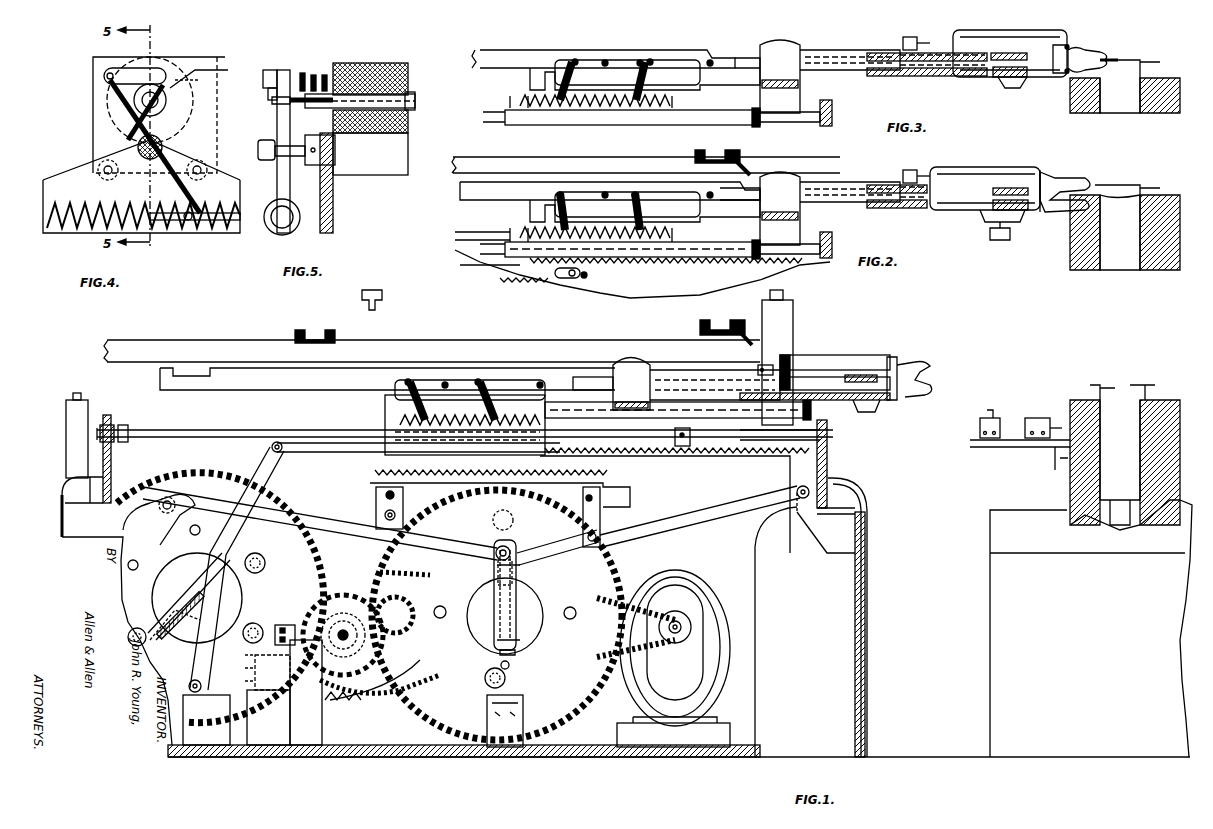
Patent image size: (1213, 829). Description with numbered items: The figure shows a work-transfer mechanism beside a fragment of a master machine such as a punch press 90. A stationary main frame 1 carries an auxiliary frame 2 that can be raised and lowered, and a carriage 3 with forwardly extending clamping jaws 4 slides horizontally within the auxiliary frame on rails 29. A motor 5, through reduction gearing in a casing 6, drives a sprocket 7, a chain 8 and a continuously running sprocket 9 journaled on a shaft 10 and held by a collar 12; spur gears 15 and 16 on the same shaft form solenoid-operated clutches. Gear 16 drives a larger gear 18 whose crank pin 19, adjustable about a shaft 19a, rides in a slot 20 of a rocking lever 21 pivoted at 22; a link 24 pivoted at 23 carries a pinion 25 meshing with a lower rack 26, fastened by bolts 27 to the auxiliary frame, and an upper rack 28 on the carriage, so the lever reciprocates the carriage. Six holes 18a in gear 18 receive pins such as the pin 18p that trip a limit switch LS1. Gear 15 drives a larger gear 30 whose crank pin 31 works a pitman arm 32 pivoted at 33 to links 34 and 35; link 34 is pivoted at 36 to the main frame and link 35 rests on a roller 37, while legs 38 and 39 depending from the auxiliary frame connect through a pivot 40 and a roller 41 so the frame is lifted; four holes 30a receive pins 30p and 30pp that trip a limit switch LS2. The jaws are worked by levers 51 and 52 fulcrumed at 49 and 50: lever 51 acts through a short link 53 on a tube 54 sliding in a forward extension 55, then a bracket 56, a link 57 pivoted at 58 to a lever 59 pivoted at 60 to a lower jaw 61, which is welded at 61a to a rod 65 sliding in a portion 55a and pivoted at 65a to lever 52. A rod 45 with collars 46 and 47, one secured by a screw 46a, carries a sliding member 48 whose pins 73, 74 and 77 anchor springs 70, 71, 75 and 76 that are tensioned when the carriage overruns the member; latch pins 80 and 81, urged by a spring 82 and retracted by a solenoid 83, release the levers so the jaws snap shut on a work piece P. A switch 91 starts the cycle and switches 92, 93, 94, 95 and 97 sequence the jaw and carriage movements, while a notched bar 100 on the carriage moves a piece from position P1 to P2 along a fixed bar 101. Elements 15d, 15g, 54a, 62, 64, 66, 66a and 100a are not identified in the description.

In FIG. 1, the main frame 1 is at (865, 605).
In FIG. 3, the auxiliary frame 2 is at (832, 108).
In FIG. 2, the auxiliary frame 2 is at (832, 242).
In FIG. 1, the auxiliary frame 2 is at (845, 478).
In FIG. 3, the carriage 3 is at (651, 110).
In FIG. 2, the carriage 3 is at (650, 242).
In FIG. 1, the carriage 3 is at (678, 413).
In FIG. 1, the clamping jaws 4 is at (940, 385).
In FIG. 1, the motor 5 is at (730, 672).
In FIG. 1, the casing 6 is at (705, 658).
In FIG. 1, the sprocket 7 is at (690, 620).
In FIG. 1, the chain 8 is at (628, 582).
In FIG. 1, the sprocket 9 is at (410, 660).
In FIG. 1, the shaft 10 is at (390, 665).
In FIG. 1, the collar 12 is at (303, 635).
In FIG. 1, the spur gear 15 is at (410, 640).
In FIG. 1, the cam chain 15d is at (360, 710).
In FIG. 1, the cam lobe 15g is at (340, 747).
In FIG. 1, the spur gear 16 is at (350, 596).
In FIG. 1, the larger gear 18 is at (296, 530).
In FIG. 1, the holes 18a is at (200, 530).
In FIG. 1, the pin 18p is at (267, 563).
In FIG. 1, the crank pin 19 is at (205, 565).
In FIG. 1, the shaft 19a is at (175, 608).
In FIG. 1, the slot 20 is at (240, 583).
In FIG. 1, the rocking lever 21 is at (238, 525).
In FIG. 1, the pivot 22 is at (192, 700).
In FIG. 1, the pivot 23 is at (268, 447).
In FIG. 1, the bar or link 24 is at (305, 452).
In FIG. 2, the pinion 25 is at (605, 280).
In FIG. 1, the pinion 25 is at (530, 460).
In FIG. 1, the lower rack 26 is at (545, 490).
In FIG. 1, the bolts 27 is at (605, 505).
In FIG. 2, the upper rack 28 is at (692, 263).
In FIG. 1, the upper rack 28 is at (635, 455).
In FIG. 1, the rails 29 is at (760, 440).
In FIG. 1, the larger gear 30 is at (575, 712).
In FIG. 1, the holes 30a is at (524, 585).
In FIG. 1, the pin 30p is at (500, 535).
In FIG. 1, the pin 30pp is at (508, 676).
In FIG. 1, the crank pin 31 is at (518, 608).
In FIG. 1, the pitman arm 32 is at (520, 575).
In FIG. 1, the pivot 33 is at (520, 535).
In FIG. 1, the link 34 is at (685, 530).
In FIG. 1, the link 35 is at (440, 555).
In FIG. 1, the pivot 36 is at (810, 490).
In FIG. 1, the roller 37 is at (165, 510).
In FIG. 1, the leg 38 is at (603, 515).
In FIG. 1, the leg 39 is at (395, 500).
In FIG. 1, the pivot 40 is at (565, 560).
In FIG. 1, the roller 41 is at (320, 523).
In FIG. 3, the rod 45 is at (712, 112).
In FIG. 2, the rod 45 is at (715, 247).
In FIG. 1, the rod 45 is at (178, 443).
In FIG. 1, the collar 46 is at (125, 445).
In FIG. 1, the screw or pin 46a is at (130, 425).
In FIG. 3, the collar 47 is at (680, 105).
In FIG. 2, the collar 47 is at (713, 233).
In FIG. 1, the collar 47 is at (688, 440).
In FIG. 1, the sliding member 48 is at (575, 428).
In FIG. 4, the fulcrum 49 is at (128, 140).
In FIG. 1, the fulcrum 49 is at (405, 392).
In FIG. 1, the fulcrum 50 is at (500, 410).
In FIG. 4, the lever 51 is at (105, 78).
In FIG. 5, the lever 51 is at (277, 118).
In FIG. 1, the lever 51 is at (405, 384).
In FIG. 1, the lever 52 is at (480, 380).
In FIG. 1, the short link 53 is at (420, 378).
In FIG. 1, the tube 54 is at (455, 378).
In FIG. 1, the bearing 54a is at (837, 373).
In FIG. 1, the forward extension 55 is at (760, 400).
In FIG. 3, the forwardly extending portion 55a is at (1000, 77).
In FIG. 2, the forwardly extending portion 55a is at (1003, 172).
In FIG. 1, the forwardly extending portion 55a is at (860, 415).
In FIG. 1, the bracket 56 is at (810, 360).
In FIG. 1, the link 57 is at (870, 355).
In FIG. 1, the pivot 58 is at (900, 357).
In FIG. 1, the lever 59 is at (890, 400).
In FIG. 1, the pivot 60 is at (910, 398).
In FIG. 2, the lower clamp jaw 61 is at (1065, 191).
In FIG. 1, the lower clamp jaw 61 is at (922, 400).
In FIG. 3, the weld 61a is at (1058, 72).
In FIG. 1, the weld 61a is at (895, 415).
In FIG. 1, the jaw tip 62 is at (935, 364).
In FIG. 1, the jaw pin 64 is at (922, 352).
In FIG. 1, the rod 65 is at (600, 375).
In FIG. 1, the pivot 65a is at (580, 377).
In FIG. 1, the pin 66 is at (520, 378).
In FIG. 1, the pin 66a is at (505, 370).
In FIG. 3, the spring 70 is at (528, 80).
In FIG. 2, the spring 70 is at (530, 220).
In FIG. 1, the spring 70 is at (395, 412).
In FIG. 3, the spring 71 is at (590, 84).
In FIG. 2, the spring 71 is at (590, 220).
In FIG. 2, the pin 73 is at (500, 230).
In FIG. 1, the pin 73 is at (385, 420).
In FIG. 2, the pin 74 is at (580, 268).
In FIG. 3, the spring 75 is at (625, 110).
In FIG. 2, the spring 75 is at (650, 258).
In FIG. 1, the spring 75 is at (430, 406).
In FIG. 3, the spring 76 is at (678, 84).
In FIG. 2, the spring 76 is at (678, 220).
In FIG. 1, the spring 76 is at (528, 408).
In FIG. 2, the pin 77 is at (675, 242).
In FIG. 1, the pin 77 is at (545, 425).
In FIG. 4, the latch pin 80 is at (165, 85).
In FIG. 5, the latch pin 80 is at (300, 72).
In FIG. 3, the latch pin 80 is at (573, 60).
In FIG. 1, the latch pin 80 is at (412, 378).
In FIG. 3, the latch pin 81 is at (650, 60).
In FIG. 1, the latch pin 81 is at (488, 378).
In FIG. 4, the compression spring 82 is at (190, 82).
In FIG. 5, the compression spring 82 is at (328, 78).
In FIG. 5, the solenoid 83 is at (378, 65).
In FIG. 1, the punch press 90 is at (998, 628).
In FIG. 1, the switch 91 is at (1040, 418).
In FIG. 2, the switch 92 is at (1010, 240).
In FIG. 1, the switch 92 is at (990, 418).
In FIG. 3, the switch 93 is at (900, 42).
In FIG. 2, the switch 93 is at (905, 175).
In FIG. 1, the switch 93 is at (775, 365).
In FIG. 1, the switch 94 is at (790, 297).
In FIG. 1, the switch 95 is at (360, 296).
In FIG. 1, the switch 97 is at (72, 395).
In FIG. 2, the notched bar 100 is at (490, 190).
In FIG. 1, the notched bar 100 is at (295, 392).
In FIG. 3, the rail 100a is at (708, 50).
In FIG. 2, the rail 100a is at (712, 188).
In FIG. 2, the bar 101 is at (480, 168).
In FIG. 1, the bar 101 is at (192, 345).
In FIG. 3, the work piece P is at (1142, 55).
In FIG. 2, the work piece P is at (1142, 185).
In FIG. 1, the work piece P is at (1100, 388).
In FIG. 2, the work piece position P1 is at (748, 160).
In FIG. 1, the work piece position P1 is at (695, 332).
In FIG. 1, the work piece position P2 is at (295, 330).
In FIG. 1, the limit switch LS1 is at (256, 668).
In FIG. 1, the limit switch LS2 is at (520, 705).